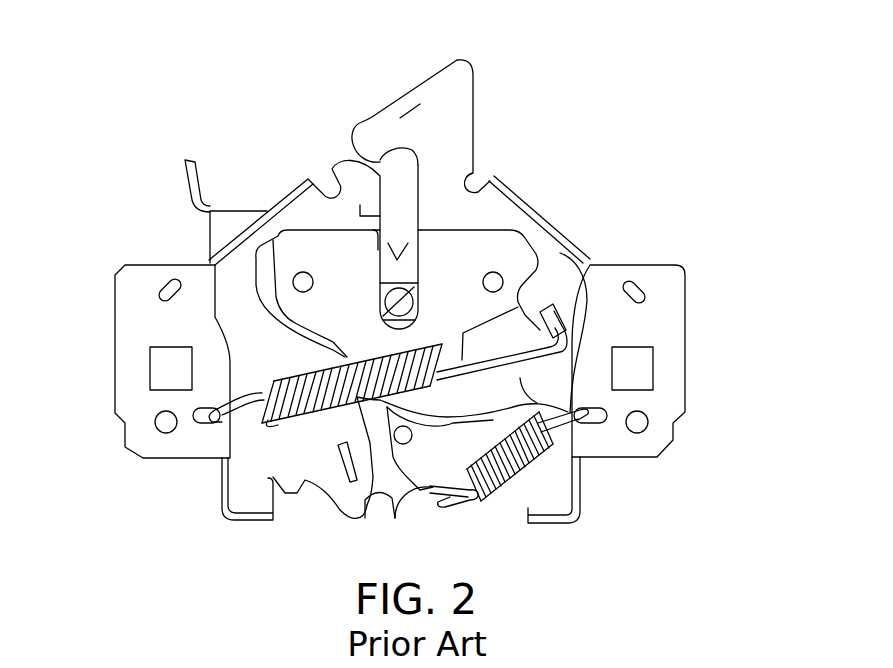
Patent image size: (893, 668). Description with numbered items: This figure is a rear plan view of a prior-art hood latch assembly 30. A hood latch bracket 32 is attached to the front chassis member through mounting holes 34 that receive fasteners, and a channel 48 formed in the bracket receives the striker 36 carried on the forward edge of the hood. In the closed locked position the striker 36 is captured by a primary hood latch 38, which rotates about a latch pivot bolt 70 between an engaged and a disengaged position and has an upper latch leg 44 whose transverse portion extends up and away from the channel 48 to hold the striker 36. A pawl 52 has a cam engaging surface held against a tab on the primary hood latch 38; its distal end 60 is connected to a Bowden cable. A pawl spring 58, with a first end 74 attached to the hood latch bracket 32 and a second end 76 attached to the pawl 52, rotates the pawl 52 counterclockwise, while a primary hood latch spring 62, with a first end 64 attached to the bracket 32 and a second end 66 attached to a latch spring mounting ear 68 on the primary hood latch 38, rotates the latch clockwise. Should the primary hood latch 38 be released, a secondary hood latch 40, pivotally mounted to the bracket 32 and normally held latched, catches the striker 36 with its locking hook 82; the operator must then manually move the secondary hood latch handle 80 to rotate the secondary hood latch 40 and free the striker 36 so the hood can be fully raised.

The hood latch assembly 30 is at (616, 140).
The hood latch bracket 32 is at (670, 298).
The mounting holes 34 is at (150, 372).
The striker 36 is at (401, 300).
The primary hood latch 38 is at (503, 375).
The secondary hood latch 40 is at (450, 72).
The upper latch leg 44 is at (397, 258).
The channel 48 is at (391, 118).
The pawl 52 is at (370, 422).
The pawl spring 58 is at (490, 492).
The distal end 60 is at (380, 520).
The primary hood latch spring 62 is at (283, 380).
The first end 64 is at (240, 423).
The second end 66 is at (492, 365).
The latch spring mounting ear 68 is at (562, 268).
The latch pivot bolt 70 is at (497, 278).
The first end 74 is at (557, 440).
The second end 76 is at (470, 510).
The secondary hood latch handle 80 is at (182, 177).
The locking hook 82 is at (388, 118).